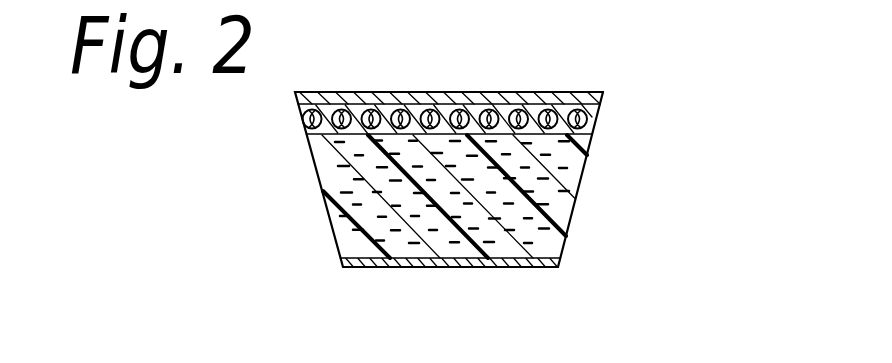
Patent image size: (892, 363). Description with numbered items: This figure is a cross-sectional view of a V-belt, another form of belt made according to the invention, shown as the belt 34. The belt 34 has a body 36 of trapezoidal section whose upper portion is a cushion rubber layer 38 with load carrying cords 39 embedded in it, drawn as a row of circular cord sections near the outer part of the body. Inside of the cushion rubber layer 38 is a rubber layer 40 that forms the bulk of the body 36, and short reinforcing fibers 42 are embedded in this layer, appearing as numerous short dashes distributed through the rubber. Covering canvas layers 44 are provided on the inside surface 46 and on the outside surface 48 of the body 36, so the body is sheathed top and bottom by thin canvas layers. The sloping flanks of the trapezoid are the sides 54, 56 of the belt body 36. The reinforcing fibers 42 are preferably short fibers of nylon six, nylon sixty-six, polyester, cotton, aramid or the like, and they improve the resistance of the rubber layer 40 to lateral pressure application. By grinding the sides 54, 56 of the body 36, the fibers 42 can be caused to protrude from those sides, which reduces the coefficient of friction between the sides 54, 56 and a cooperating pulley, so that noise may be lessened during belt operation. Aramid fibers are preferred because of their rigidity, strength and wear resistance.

The belt 34 is at (637, 86).
The body 36 is at (600, 143).
The cushion rubber layer 38 is at (306, 110).
The load carrying cords 39 is at (402, 110).
The rubber layer 40 is at (573, 205).
The short reinforcing fibers 42 is at (438, 225).
The covering canvas layers 44 is at (460, 173).
The inside surface 46 is at (472, 260).
The outside surface 48 is at (463, 97).
The side 54 is at (581, 180).
The side 56 is at (328, 212).